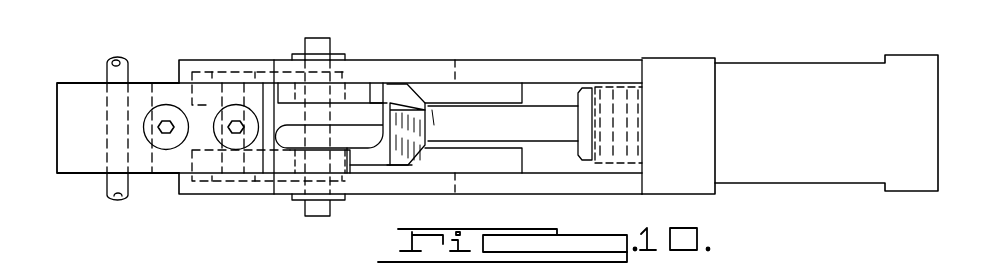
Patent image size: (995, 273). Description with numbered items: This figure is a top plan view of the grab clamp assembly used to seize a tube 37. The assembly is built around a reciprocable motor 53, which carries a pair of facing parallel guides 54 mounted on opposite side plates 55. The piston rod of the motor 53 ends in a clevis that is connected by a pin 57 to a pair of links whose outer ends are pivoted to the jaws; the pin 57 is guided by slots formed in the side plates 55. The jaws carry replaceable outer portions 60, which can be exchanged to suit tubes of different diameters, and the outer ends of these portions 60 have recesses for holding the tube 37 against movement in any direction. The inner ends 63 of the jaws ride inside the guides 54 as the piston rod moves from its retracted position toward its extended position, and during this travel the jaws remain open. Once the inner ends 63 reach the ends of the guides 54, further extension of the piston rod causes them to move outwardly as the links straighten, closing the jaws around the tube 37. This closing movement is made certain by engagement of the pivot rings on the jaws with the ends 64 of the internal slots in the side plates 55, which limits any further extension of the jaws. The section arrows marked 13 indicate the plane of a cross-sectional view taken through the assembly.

The section line 13- 13 is at (43, 215).
The tube 37 is at (116, 64).
The reciprocable motor 53 is at (783, 77).
The guides 54 is at (458, 92).
The side plates 55 is at (538, 68).
The pin 57 is at (314, 38).
The replaceable outer portions 60 is at (95, 165).
The inner ends 63 is at (404, 112).
The ends of internal slots 64 is at (197, 97).